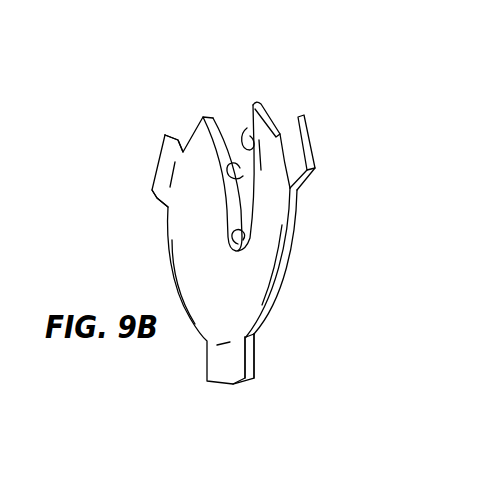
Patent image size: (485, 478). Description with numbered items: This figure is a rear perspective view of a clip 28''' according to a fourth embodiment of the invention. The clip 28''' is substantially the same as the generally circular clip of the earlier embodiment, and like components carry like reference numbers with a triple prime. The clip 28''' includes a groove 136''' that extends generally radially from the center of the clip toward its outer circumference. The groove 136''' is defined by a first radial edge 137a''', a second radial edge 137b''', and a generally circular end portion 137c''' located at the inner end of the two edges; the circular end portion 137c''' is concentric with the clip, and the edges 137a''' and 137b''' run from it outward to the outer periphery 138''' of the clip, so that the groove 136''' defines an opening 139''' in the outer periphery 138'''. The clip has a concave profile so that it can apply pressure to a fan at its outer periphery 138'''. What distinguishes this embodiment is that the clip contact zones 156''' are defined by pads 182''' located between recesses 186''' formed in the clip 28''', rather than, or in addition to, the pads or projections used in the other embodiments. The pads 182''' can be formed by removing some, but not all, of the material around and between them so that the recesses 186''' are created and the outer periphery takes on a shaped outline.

The clip 28''' is at (258, 200).
The groove 136''' is at (218, 149).
The outer periphery 138''' is at (299, 235).
The opening 139''' is at (268, 135).
The first radial edge 137a''' is at (325, 102).
The second radial edge 137b''' is at (158, 202).
The circular end portion 137c''' is at (219, 265).
The clip contact zones 156''' is at (241, 255).
The pads 182''' is at (227, 274).
The recesses 186''' is at (225, 186).